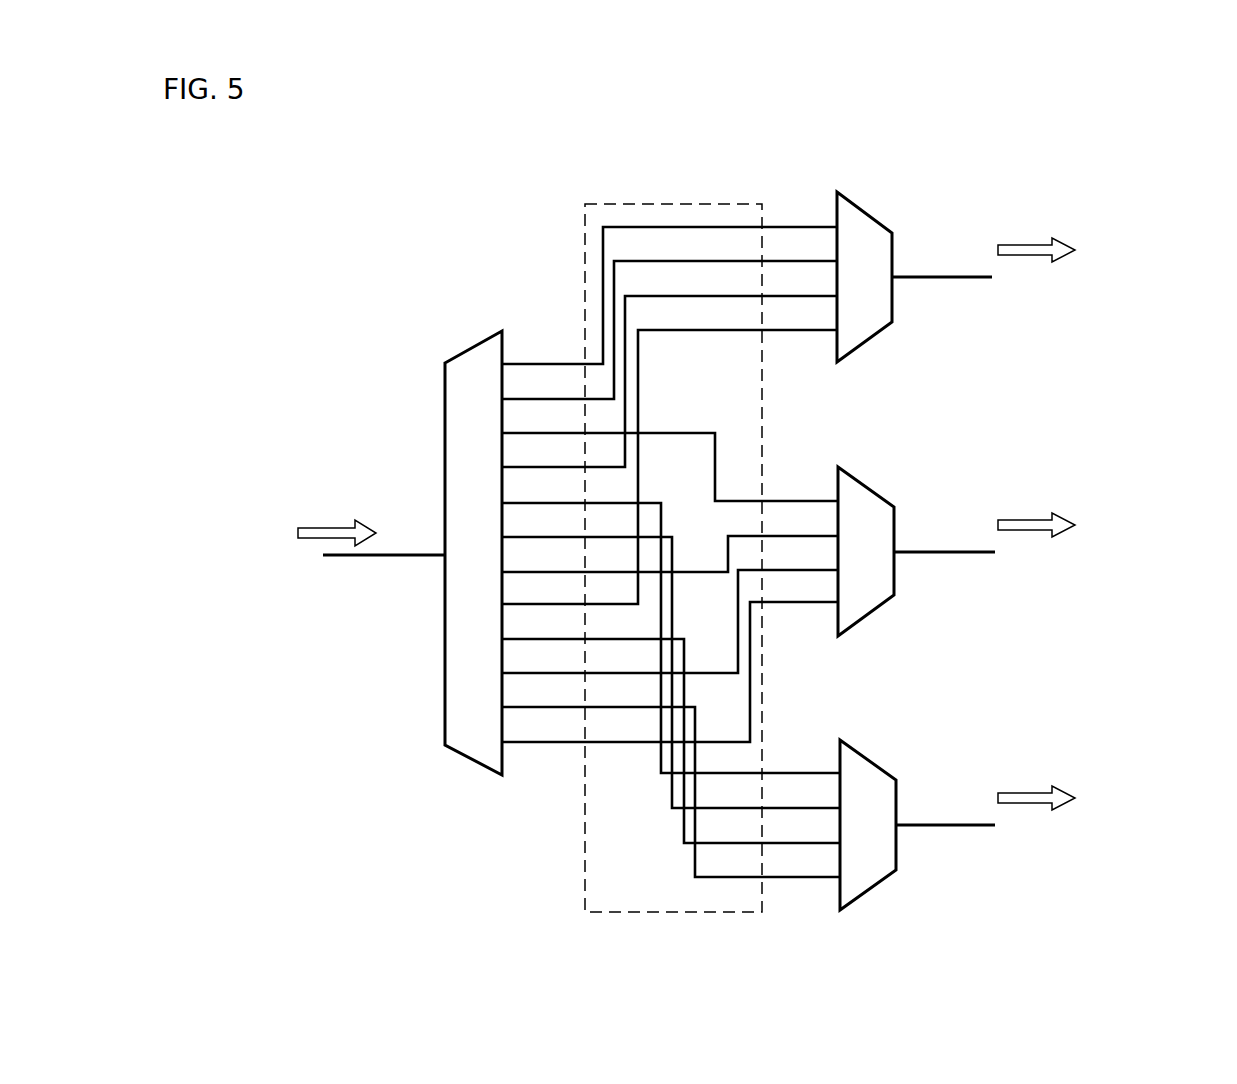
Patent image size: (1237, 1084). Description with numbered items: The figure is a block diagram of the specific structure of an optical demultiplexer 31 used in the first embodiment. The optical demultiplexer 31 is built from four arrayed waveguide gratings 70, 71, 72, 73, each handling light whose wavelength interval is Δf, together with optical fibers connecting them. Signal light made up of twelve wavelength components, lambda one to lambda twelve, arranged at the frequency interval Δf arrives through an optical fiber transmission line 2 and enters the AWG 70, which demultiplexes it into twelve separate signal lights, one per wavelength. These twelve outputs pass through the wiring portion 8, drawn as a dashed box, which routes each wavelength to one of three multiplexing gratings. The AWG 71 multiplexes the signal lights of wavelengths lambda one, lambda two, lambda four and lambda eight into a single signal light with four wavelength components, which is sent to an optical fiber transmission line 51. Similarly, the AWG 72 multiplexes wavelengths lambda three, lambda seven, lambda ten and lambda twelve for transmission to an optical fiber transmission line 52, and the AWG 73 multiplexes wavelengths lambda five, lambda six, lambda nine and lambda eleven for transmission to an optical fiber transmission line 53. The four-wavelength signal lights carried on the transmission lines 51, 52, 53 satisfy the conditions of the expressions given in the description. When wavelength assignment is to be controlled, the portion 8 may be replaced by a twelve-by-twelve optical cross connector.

The optical fiber transmission line 2 is at (370, 556).
The portion 8 is at (710, 203).
The optical demultiplexer 31 is at (1040, 376).
The optical fiber transmission line 51 is at (945, 280).
The optical fiber transmission line 52 is at (947, 555).
The optical fiber transmission line 53 is at (947, 828).
The arrayed waveguide grating 70 is at (470, 741).
The arrayed waveguide grating 71 is at (877, 237).
The arrayed waveguide grating 72 is at (880, 510).
The arrayed waveguide grating 73 is at (873, 790).